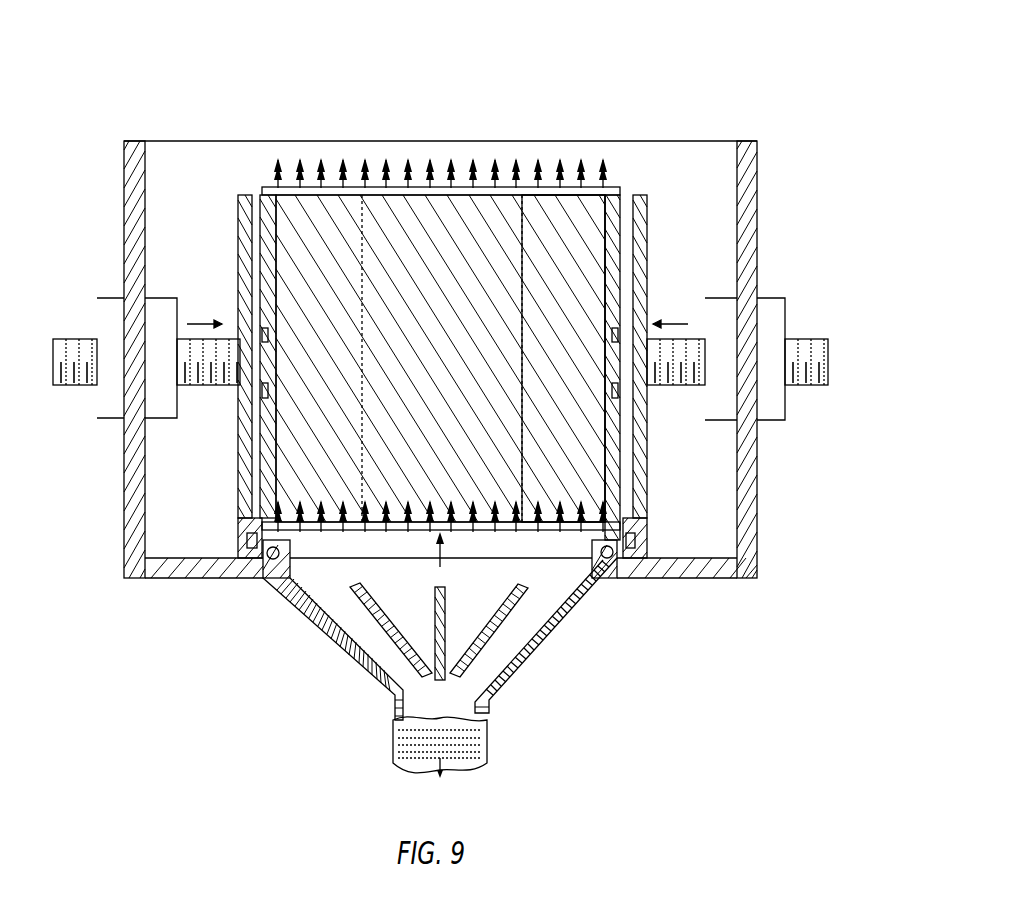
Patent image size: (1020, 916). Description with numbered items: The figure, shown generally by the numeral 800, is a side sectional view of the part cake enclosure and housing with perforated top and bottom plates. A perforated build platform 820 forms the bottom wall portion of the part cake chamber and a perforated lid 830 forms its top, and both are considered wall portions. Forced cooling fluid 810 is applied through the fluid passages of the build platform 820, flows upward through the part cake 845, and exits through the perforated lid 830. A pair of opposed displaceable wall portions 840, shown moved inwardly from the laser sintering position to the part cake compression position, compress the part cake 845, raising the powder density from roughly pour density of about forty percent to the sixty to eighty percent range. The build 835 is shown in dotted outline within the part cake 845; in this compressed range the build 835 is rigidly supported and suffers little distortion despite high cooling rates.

The part cake enclosure and housing 800 is at (133, 100).
The forced cooling fluid 810 is at (387, 642).
The perforated build platform 820 is at (527, 527).
The perforated lid 830 is at (612, 188).
The build 835 is at (362, 427).
The opposed displaceable wall portions 840 is at (260, 252).
The part cake 845 is at (603, 420).